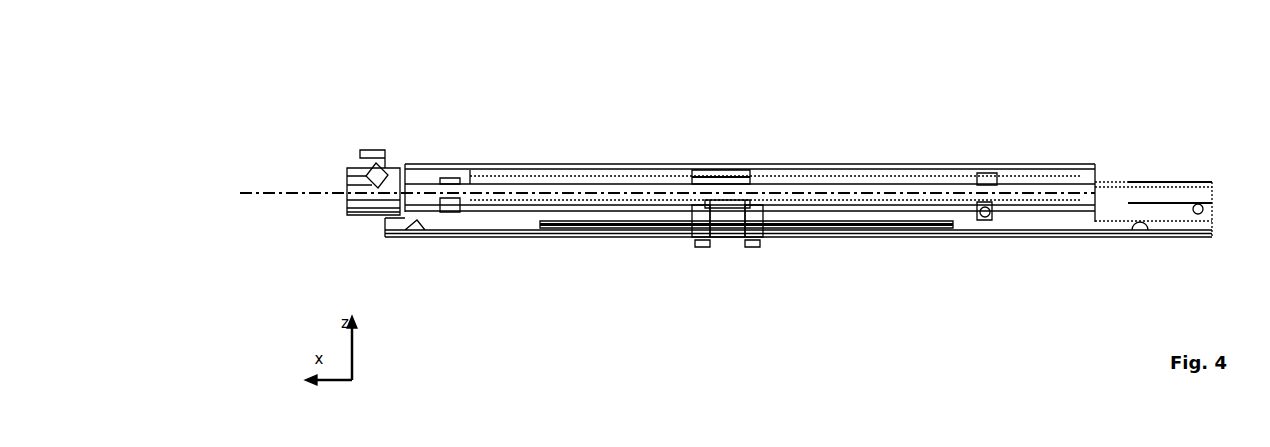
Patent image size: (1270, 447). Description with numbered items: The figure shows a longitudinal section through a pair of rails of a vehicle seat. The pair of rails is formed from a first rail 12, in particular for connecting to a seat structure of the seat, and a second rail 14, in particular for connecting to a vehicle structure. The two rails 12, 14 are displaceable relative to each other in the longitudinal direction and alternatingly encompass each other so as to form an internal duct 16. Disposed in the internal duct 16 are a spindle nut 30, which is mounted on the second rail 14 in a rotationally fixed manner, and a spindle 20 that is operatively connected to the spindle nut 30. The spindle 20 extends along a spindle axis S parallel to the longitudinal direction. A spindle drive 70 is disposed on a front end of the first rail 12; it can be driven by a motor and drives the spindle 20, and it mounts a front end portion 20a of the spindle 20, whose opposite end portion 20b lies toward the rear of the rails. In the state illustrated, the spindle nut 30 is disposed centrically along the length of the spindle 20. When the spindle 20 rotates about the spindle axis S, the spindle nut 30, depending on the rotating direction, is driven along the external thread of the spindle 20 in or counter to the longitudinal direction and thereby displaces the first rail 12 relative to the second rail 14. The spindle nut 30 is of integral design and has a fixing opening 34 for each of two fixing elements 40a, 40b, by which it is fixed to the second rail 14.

The spindle axis S is at (280, 190).
The first rail 12 is at (936, 165).
The second rail 14 is at (985, 237).
The internal duct 16 is at (795, 178).
The spindle 20 is at (890, 190).
The front end portion 20a is at (408, 170).
The second shaft end 20b is at (1012, 185).
The spindle nut 30 is at (740, 227).
The fixing opening 34 is at (753, 221).
The fixing element 40a is at (712, 227).
The fixing element 40b is at (745, 225).
The spindle drive 70 is at (362, 155).